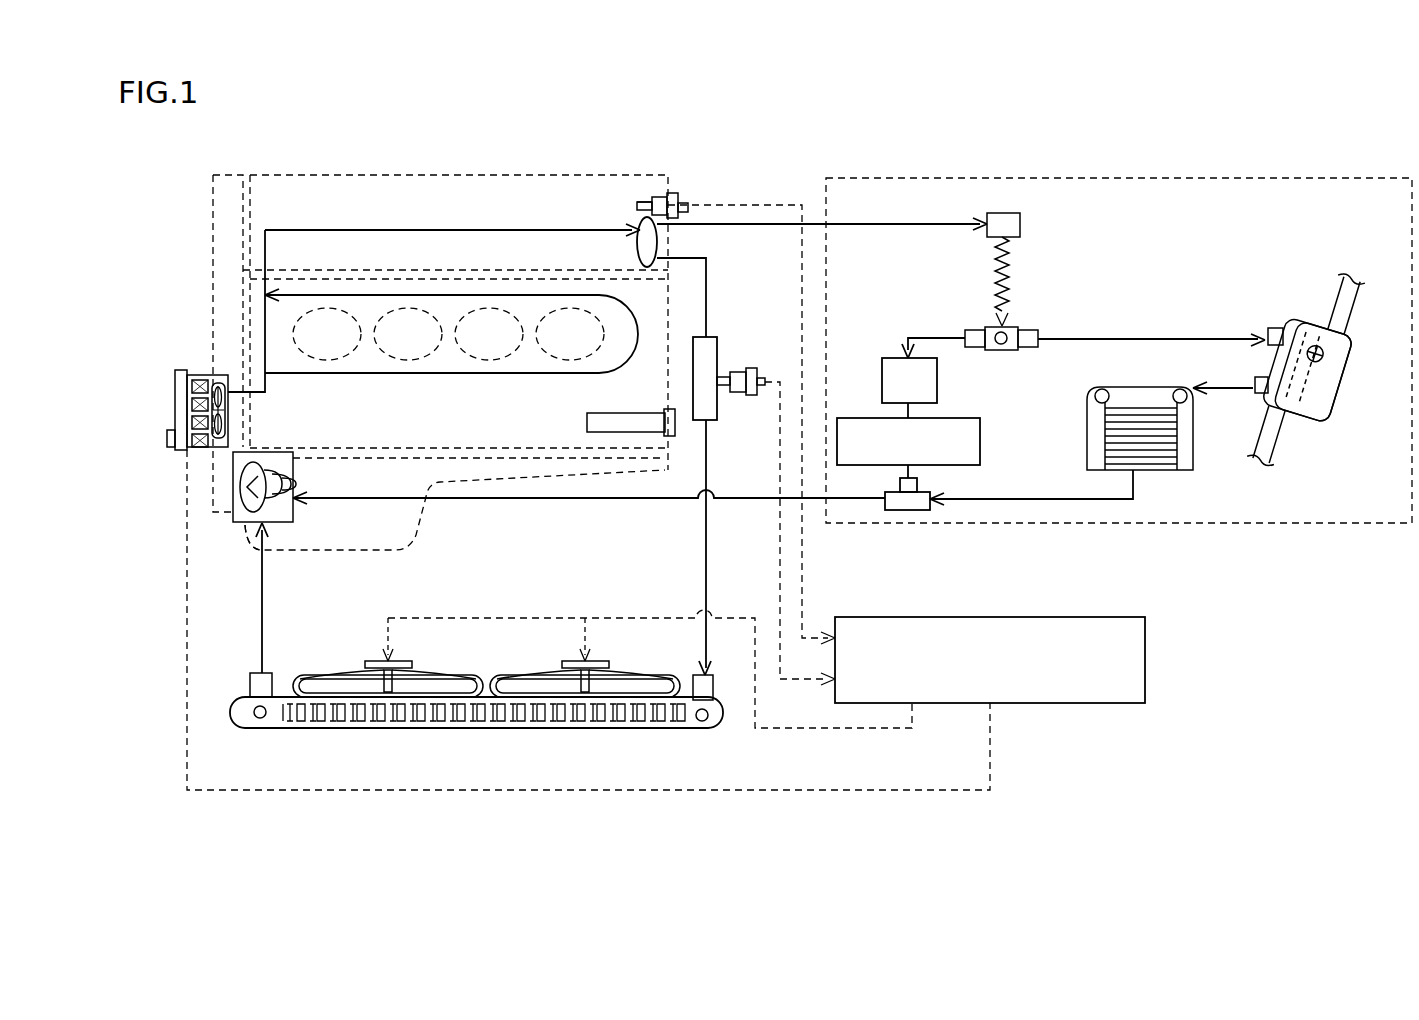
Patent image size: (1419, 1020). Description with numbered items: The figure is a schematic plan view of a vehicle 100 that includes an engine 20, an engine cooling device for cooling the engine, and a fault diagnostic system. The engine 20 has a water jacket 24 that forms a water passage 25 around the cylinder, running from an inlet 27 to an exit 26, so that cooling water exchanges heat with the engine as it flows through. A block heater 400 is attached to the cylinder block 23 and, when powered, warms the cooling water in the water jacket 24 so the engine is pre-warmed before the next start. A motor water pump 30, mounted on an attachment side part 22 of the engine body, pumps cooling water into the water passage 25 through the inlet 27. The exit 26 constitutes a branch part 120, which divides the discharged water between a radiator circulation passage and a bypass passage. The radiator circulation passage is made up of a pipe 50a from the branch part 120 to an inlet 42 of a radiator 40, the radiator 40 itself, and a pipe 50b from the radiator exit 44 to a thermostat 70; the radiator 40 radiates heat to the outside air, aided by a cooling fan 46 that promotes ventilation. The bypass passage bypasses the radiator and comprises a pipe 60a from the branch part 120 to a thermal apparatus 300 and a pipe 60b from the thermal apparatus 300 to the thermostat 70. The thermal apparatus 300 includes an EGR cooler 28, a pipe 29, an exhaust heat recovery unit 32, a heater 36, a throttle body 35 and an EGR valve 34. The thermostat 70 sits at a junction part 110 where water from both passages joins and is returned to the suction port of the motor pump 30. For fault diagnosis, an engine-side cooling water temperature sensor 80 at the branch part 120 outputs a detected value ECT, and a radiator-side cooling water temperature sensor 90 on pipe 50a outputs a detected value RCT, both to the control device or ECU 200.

The engine 20 is at (422, 176).
The attachment side part 22 is at (230, 175).
The cylinder block 23 is at (503, 270).
The water jacket 24 is at (382, 175).
The water passage 25 is at (535, 225).
The exit 26 is at (660, 242).
The inlet 27 is at (217, 465).
The EGR cooler 28 is at (1005, 213).
The pipe 29 is at (1143, 338).
The motor water pump 30 is at (196, 464).
The exhaust heat recovery unit 32 is at (1340, 327).
The EGR valve 34 is at (950, 418).
The throttle body 35 is at (893, 358).
The heater 36 is at (1148, 387).
The radiator 40 is at (588, 730).
The inlet 42 is at (706, 688).
The exit 44 is at (251, 686).
The cooling fan 46 is at (443, 668).
The pipe 50a is at (707, 316).
The pipe 50b is at (262, 612).
The pipe 60a is at (813, 224).
The pipe 60b is at (605, 499).
The thermostat 70 is at (293, 476).
The engine-side cooling water temperature sensor 80 is at (671, 193).
The radiator-side cooling water temperature sensor 90 is at (752, 368).
The vehicle 100 is at (742, 825).
The junction part 110 is at (237, 524).
The branch part 120 is at (641, 195).
The control device (ECU) 200 is at (1090, 617).
The thermal apparatus 300 is at (1152, 178).
The block heater 400 is at (598, 413).